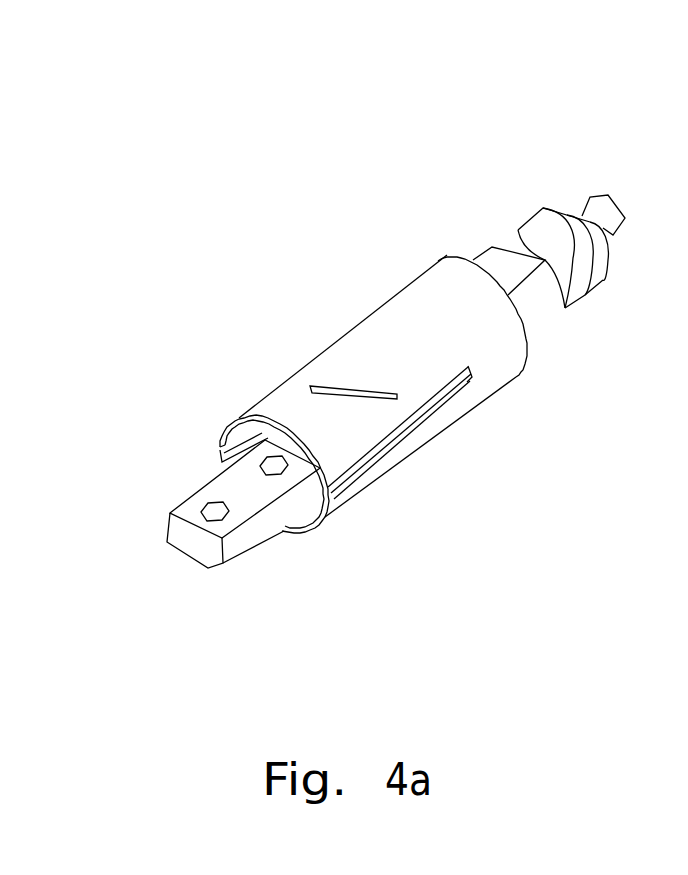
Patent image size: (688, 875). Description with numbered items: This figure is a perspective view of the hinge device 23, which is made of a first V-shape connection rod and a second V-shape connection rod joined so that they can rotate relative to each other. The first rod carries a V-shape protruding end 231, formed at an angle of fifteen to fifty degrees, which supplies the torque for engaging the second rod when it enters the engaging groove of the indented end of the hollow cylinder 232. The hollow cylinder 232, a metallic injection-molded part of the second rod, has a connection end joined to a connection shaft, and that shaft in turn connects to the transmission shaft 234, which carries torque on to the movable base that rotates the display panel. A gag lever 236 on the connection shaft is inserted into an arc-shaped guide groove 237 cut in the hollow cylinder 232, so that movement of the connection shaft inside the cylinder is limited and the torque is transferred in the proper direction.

The hinge device 23 is at (131, 96).
The V-shape protruding end 231 is at (517, 260).
The hollow cylinder 232 is at (274, 390).
The transmission shaft 234 is at (220, 532).
The gag lever 236 is at (350, 398).
The arc-shaped guide groove 237 is at (394, 399).